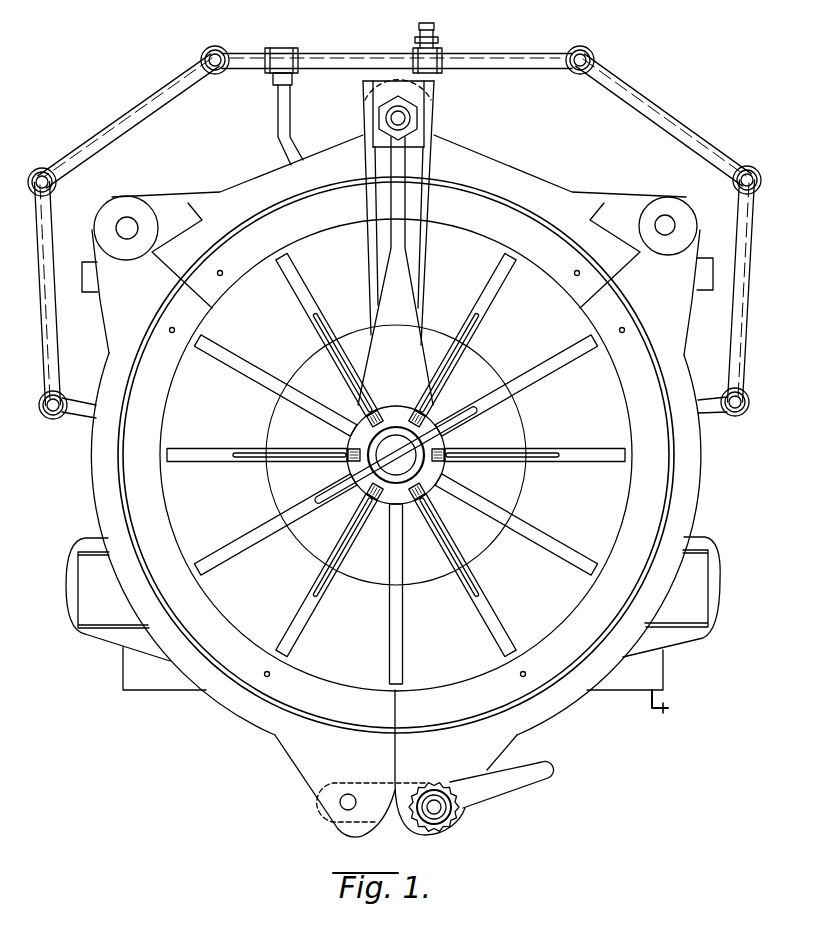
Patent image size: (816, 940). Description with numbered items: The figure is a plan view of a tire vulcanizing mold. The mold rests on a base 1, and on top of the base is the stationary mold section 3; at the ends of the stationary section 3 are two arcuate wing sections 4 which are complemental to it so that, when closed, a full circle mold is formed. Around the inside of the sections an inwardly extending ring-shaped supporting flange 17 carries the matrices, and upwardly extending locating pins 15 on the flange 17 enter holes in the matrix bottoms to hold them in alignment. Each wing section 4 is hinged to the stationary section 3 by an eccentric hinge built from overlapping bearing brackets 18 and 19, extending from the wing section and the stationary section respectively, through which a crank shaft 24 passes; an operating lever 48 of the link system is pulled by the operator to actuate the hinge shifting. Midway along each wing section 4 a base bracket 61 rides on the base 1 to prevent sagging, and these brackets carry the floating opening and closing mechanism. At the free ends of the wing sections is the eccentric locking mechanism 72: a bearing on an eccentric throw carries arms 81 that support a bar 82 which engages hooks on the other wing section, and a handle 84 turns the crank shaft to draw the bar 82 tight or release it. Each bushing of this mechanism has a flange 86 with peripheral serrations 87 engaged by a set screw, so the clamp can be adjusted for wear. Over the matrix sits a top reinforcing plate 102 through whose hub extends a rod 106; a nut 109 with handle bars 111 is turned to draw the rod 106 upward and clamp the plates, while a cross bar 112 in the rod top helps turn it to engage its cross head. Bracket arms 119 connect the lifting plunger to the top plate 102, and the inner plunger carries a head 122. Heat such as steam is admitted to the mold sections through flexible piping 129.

The base 1 is at (82, 285).
The stationary mold section 3 is at (551, 182).
The wing sections 4 is at (238, 711).
The locating pins 15 is at (224, 276).
The supporting flange 17 is at (317, 224).
The bearing bracket 18 is at (120, 316).
The bearing bracket 19 is at (171, 197).
The crank shaft 24 is at (116, 229).
The operating lever 48 is at (659, 709).
The base bracket 61 is at (78, 597).
The eccentric locking mechanism 72 is at (425, 836).
The arms 81 is at (384, 822).
The bar 82 is at (346, 809).
The handle 84 is at (545, 776).
The flange 86 is at (434, 783).
The serrations 87 is at (446, 826).
The top reinforcing plate 102 is at (532, 494).
The rod 106 is at (396, 440).
The nut 109 is at (348, 466).
The handle bars 111 is at (527, 463).
The cross bar 112 is at (467, 421).
The bracket arms 119 is at (423, 255).
The head 122 is at (418, 343).
The flexible piping 129 is at (693, 137).